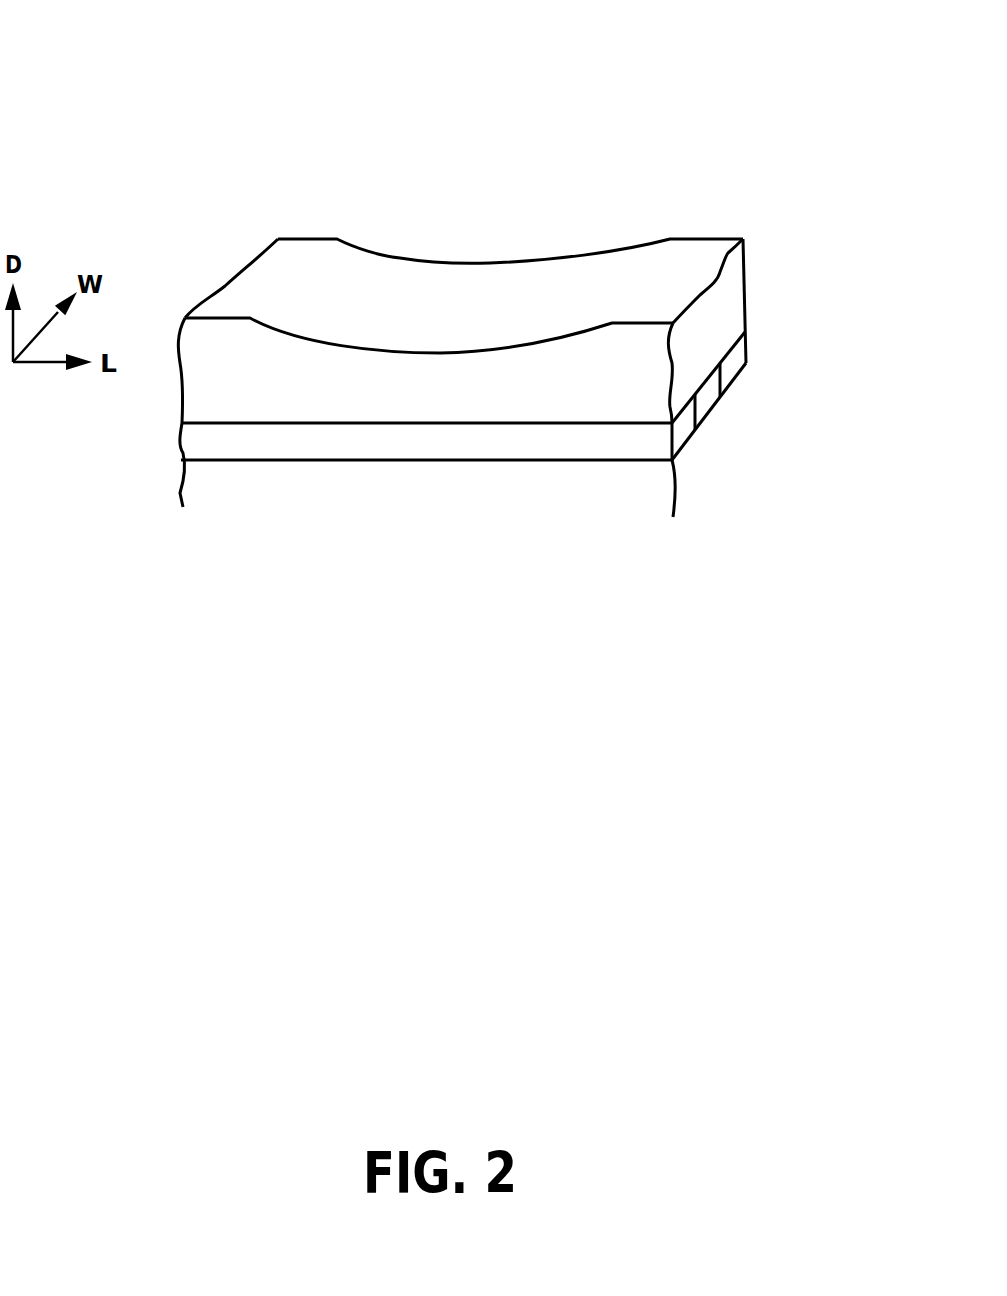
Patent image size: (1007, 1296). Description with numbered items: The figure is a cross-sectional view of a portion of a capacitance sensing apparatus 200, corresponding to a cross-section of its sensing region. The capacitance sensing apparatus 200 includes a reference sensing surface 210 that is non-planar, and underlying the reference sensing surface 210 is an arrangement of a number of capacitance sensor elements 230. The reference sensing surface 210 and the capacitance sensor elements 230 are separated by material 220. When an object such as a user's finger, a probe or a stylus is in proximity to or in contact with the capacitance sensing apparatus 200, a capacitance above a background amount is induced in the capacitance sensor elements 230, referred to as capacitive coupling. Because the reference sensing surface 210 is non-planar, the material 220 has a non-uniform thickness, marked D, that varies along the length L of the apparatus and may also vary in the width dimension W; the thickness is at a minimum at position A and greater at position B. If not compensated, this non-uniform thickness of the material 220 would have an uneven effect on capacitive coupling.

The capacitance sensing apparatus 200 is at (128, 53).
The reference sensing surface 210 is at (330, 284).
The material 220 is at (708, 318).
The capacitance sensor elements 230 is at (730, 362).